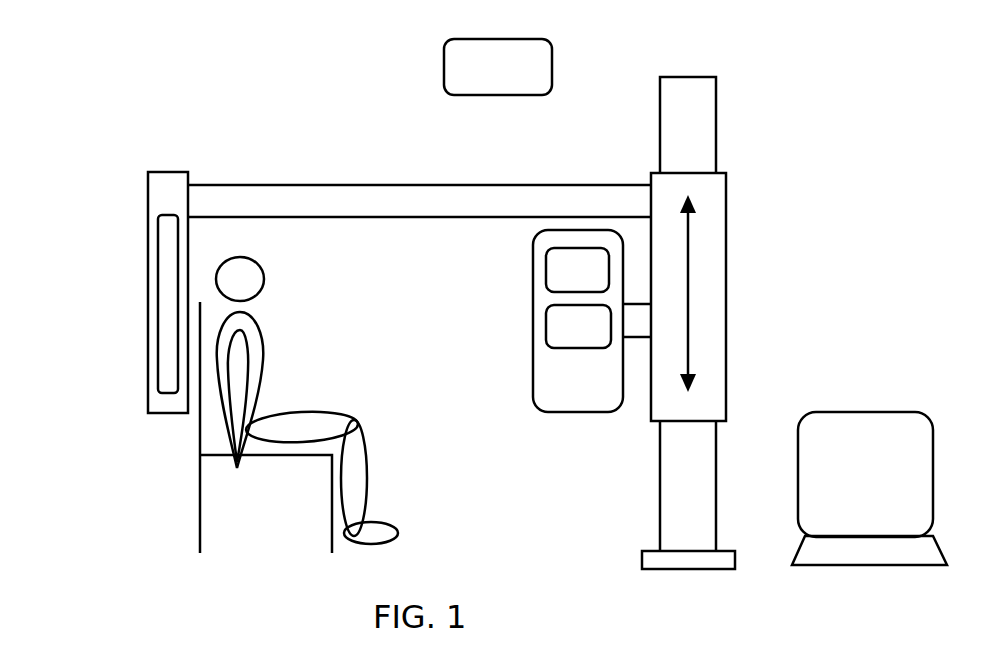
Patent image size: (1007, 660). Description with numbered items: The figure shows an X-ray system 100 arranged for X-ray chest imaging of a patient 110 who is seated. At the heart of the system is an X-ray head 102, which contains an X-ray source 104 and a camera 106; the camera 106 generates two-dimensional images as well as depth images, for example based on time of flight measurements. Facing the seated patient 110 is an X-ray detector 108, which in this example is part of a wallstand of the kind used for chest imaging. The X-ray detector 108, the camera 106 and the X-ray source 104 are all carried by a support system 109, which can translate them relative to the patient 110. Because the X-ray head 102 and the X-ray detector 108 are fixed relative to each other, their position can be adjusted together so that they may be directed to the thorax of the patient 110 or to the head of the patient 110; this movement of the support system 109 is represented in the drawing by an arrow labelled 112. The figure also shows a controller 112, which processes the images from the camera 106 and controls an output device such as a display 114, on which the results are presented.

The X-ray system 100 is at (198, 122).
The X-ray head 102 is at (573, 412).
The X-ray source 104 is at (550, 274).
The camera 106 is at (553, 327).
The X-ray detector 108 is at (157, 287).
The support system 109 is at (725, 353).
The patient 110 is at (264, 385).
The controller 112 is at (447, 61).
The display 114 is at (873, 412).